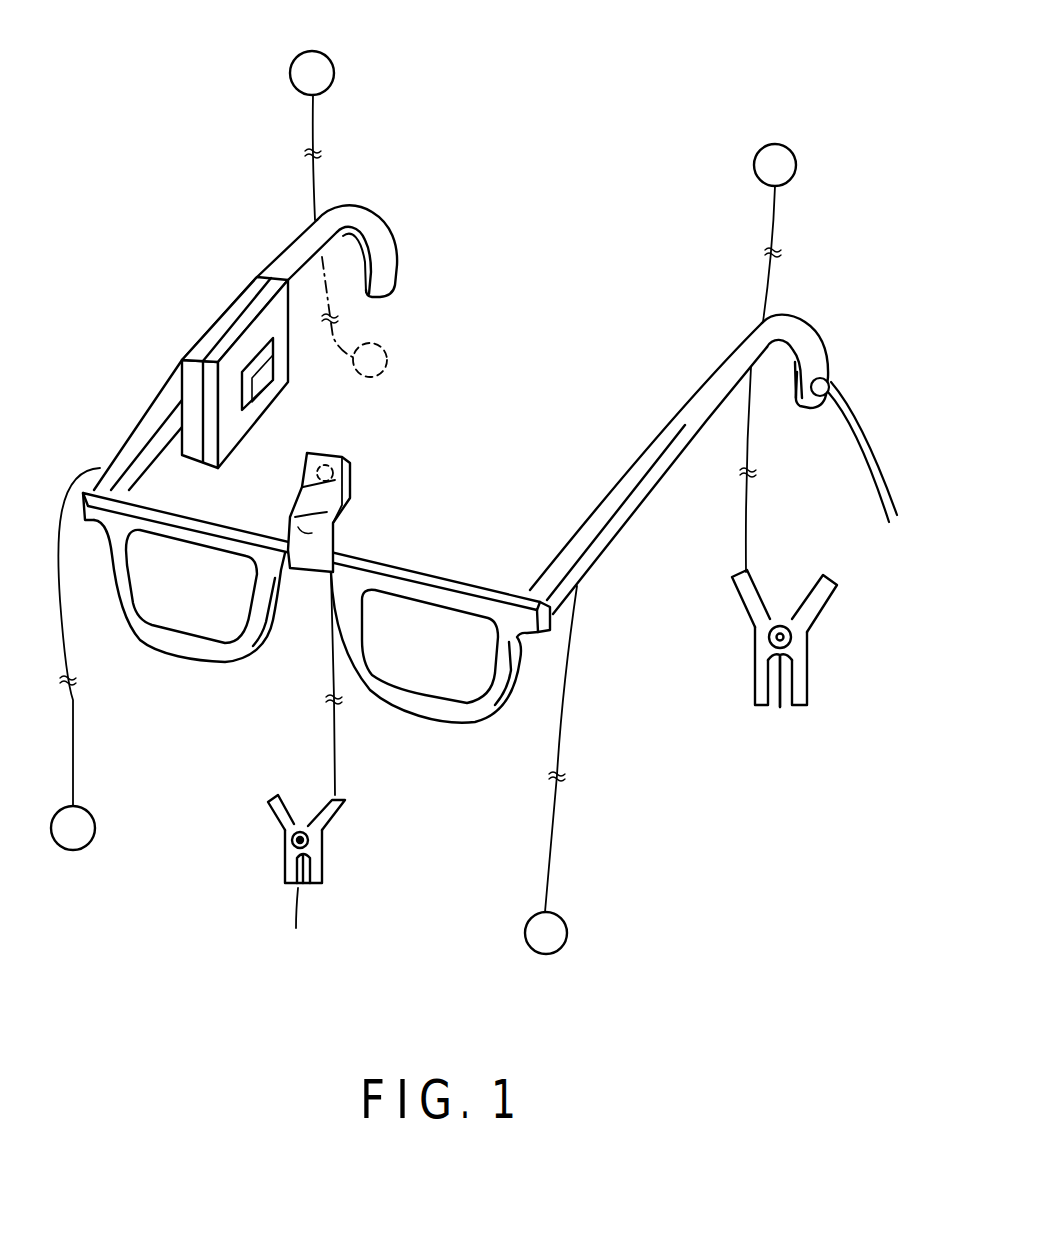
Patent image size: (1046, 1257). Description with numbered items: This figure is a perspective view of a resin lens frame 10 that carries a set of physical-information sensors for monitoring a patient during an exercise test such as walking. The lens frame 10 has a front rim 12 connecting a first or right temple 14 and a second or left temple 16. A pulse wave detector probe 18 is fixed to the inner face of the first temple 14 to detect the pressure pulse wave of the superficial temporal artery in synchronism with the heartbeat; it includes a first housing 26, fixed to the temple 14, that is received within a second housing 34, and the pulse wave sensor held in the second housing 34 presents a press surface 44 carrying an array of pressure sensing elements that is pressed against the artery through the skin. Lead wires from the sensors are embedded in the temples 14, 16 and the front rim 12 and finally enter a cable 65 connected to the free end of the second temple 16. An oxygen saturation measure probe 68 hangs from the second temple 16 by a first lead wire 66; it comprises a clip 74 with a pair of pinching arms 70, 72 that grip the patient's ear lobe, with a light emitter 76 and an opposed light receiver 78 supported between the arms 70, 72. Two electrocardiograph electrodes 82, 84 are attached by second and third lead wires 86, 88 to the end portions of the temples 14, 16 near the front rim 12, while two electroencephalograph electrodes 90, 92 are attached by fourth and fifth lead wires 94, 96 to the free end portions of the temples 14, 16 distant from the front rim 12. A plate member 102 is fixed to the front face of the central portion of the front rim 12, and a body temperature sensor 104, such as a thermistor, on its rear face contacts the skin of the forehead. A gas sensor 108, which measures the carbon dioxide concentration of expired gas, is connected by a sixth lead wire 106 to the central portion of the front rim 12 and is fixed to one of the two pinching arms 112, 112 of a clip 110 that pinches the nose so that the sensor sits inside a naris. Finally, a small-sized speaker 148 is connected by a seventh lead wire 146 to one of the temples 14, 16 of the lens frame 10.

The lens frame 10 is at (480, 797).
The front rim 12 is at (373, 560).
The first temple 14 is at (140, 432).
The second temple 16 is at (617, 500).
The pulse wave detector probe 18 is at (233, 357).
The first housing 26 is at (200, 350).
The second housing 34 is at (228, 437).
The press surface 44 is at (262, 378).
The cable 65 is at (867, 448).
The first lead wire 66 is at (749, 519).
The oxygen saturation measure probe 68 is at (796, 667).
The pinching arm 70 is at (755, 692).
The pinching arm 72 is at (810, 692).
The clip 74 is at (728, 650).
The light emitter 76 is at (771, 707).
The light receiver 78 is at (785, 707).
The electrocardiograph electrode 82 is at (73, 845).
The electrocardiograph electrode 84 is at (547, 940).
The second lead wire 86 is at (74, 763).
The third lead wire 88 is at (551, 843).
The electroencephalograph electrode 90 is at (318, 62).
The electroencephalograph electrode 92 is at (773, 152).
The fourth lead wire 94 is at (314, 128).
The fifth lead wire 96 is at (776, 224).
The plate member 102 is at (359, 495).
The body temperature sensor 104 is at (334, 463).
The sixth lead wire 106 is at (337, 752).
The gas sensor 108 is at (301, 928).
The clip 110 is at (321, 881).
The pinching arm 112 is at (285, 878).
The seventh lead wire 146 is at (338, 328).
The speaker 148 is at (388, 366).